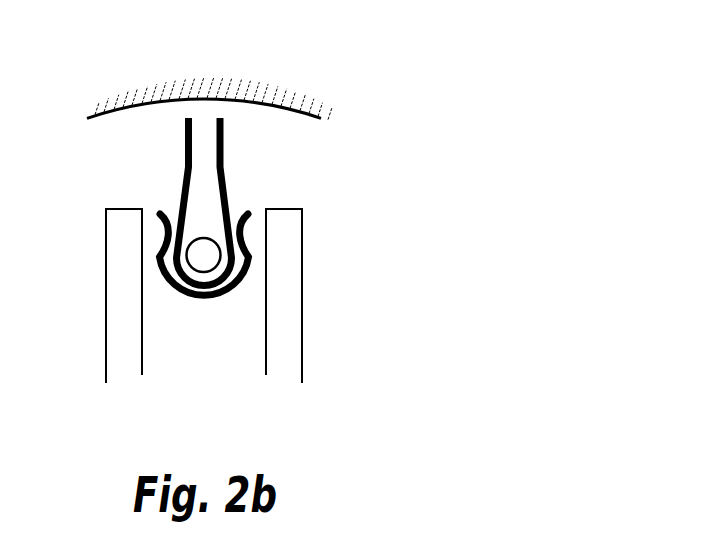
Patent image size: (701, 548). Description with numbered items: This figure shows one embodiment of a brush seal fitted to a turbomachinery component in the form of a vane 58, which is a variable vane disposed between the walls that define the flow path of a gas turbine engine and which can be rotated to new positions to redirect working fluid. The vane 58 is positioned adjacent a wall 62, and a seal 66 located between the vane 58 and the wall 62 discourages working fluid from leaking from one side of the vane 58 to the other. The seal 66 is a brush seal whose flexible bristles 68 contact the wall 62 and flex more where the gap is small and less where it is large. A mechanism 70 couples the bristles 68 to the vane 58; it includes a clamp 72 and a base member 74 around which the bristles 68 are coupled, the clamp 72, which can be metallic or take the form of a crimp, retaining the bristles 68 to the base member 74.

The vane 58 is at (497, 199).
The wall 62 is at (207, 97).
The seal 66 is at (366, 139).
The bristles 68 is at (182, 180).
The mechanism 70 is at (214, 353).
The clamp 72 is at (185, 304).
The base member 74 is at (203, 258).